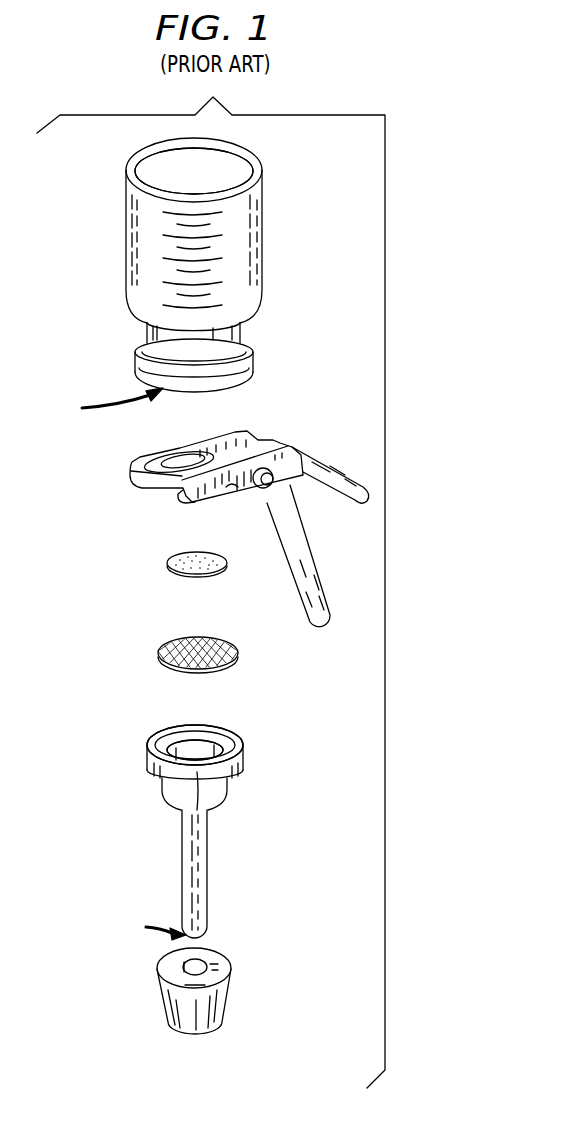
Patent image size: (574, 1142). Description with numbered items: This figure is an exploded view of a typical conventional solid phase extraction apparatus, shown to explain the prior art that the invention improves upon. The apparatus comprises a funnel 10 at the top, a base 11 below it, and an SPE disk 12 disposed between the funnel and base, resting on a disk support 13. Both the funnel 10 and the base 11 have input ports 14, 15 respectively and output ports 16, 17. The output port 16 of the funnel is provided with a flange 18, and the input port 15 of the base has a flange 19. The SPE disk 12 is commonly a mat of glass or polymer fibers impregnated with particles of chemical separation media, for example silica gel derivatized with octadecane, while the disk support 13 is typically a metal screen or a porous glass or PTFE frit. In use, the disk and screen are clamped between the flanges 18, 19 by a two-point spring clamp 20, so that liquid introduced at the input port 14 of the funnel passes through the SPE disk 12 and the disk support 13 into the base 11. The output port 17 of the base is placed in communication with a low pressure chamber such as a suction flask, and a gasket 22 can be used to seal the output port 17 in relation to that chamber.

The funnel 10 is at (262, 238).
The base 11 is at (227, 790).
The SPE disk 12 is at (167, 563).
The disk support 13 is at (238, 655).
The input port 14 is at (204, 184).
The input port 15 is at (203, 757).
The output port 16 is at (111, 404).
The output port 17 is at (155, 929).
The flange 18 is at (253, 360).
The flange 19 is at (148, 752).
The two-point spring clamp 20 is at (228, 505).
The gasket 22 is at (157, 990).